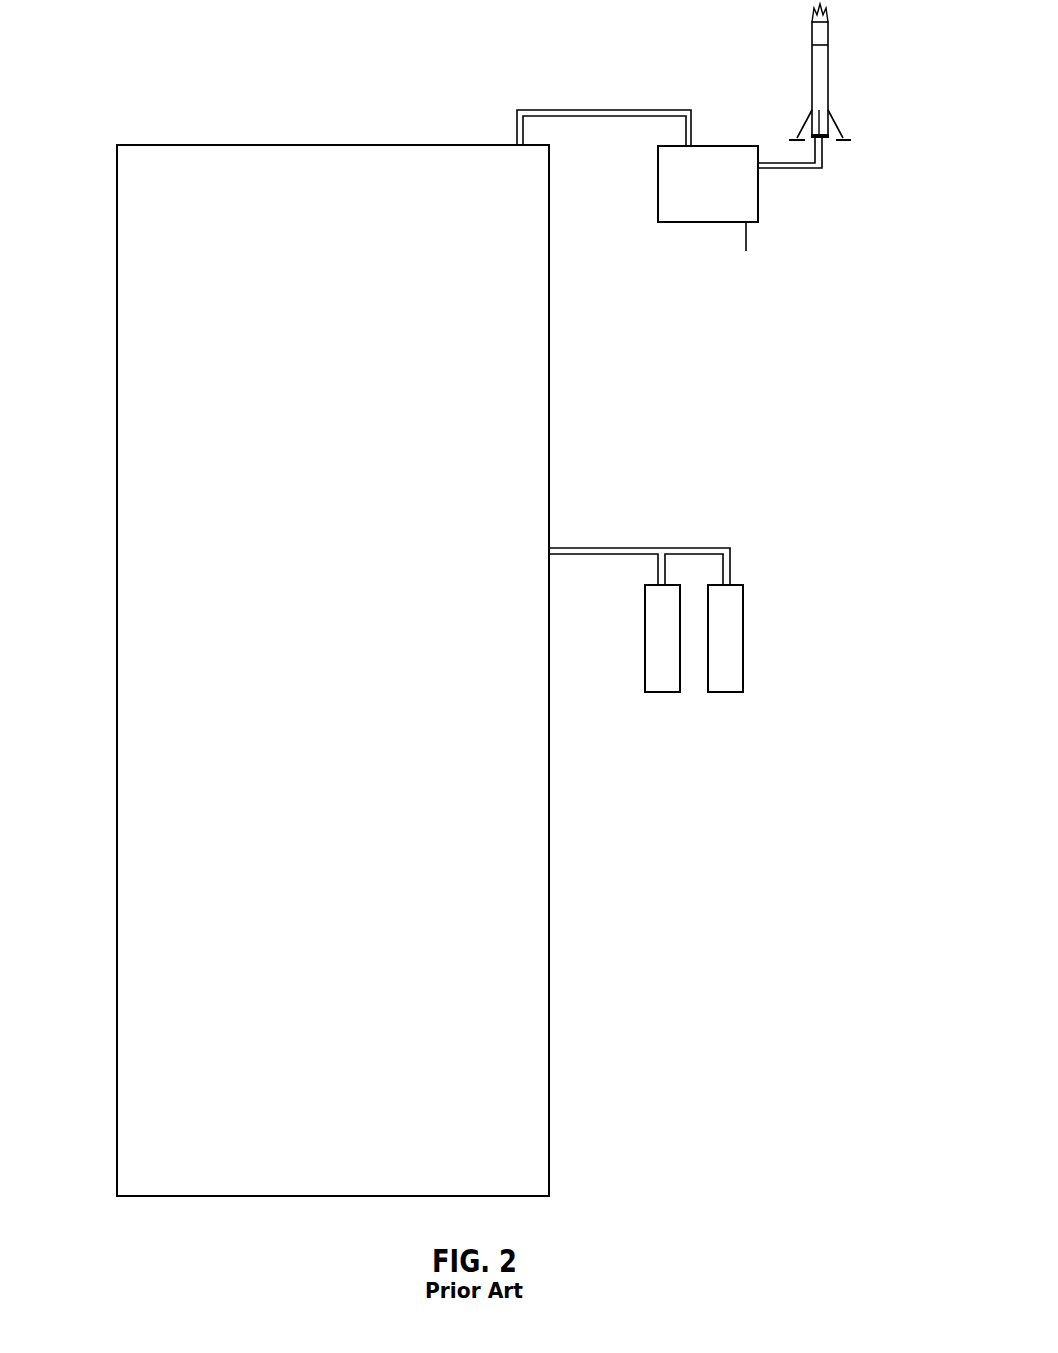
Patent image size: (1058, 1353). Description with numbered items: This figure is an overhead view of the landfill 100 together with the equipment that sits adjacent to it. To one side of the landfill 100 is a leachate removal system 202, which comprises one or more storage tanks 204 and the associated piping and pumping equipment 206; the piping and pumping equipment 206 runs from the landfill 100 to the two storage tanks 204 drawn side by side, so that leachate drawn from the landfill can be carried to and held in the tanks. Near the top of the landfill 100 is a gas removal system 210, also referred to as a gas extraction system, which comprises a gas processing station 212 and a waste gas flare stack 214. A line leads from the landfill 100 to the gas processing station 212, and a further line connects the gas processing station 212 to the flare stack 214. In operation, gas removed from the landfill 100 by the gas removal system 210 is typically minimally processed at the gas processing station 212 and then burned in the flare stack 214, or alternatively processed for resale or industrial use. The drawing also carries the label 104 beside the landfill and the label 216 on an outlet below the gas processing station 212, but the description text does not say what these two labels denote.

The landfill 100 is at (245, 204).
The tank wall 104 is at (78, 683).
The leachate removal system 202 is at (743, 572).
The storage tanks 204 is at (663, 693).
The piping and pumping equipment 206 is at (606, 547).
The gas removal system 210 is at (622, 70).
The gas processing station 212 is at (713, 165).
The waste gas flare stack 214 is at (829, 78).
The outlet line 216 is at (746, 237).